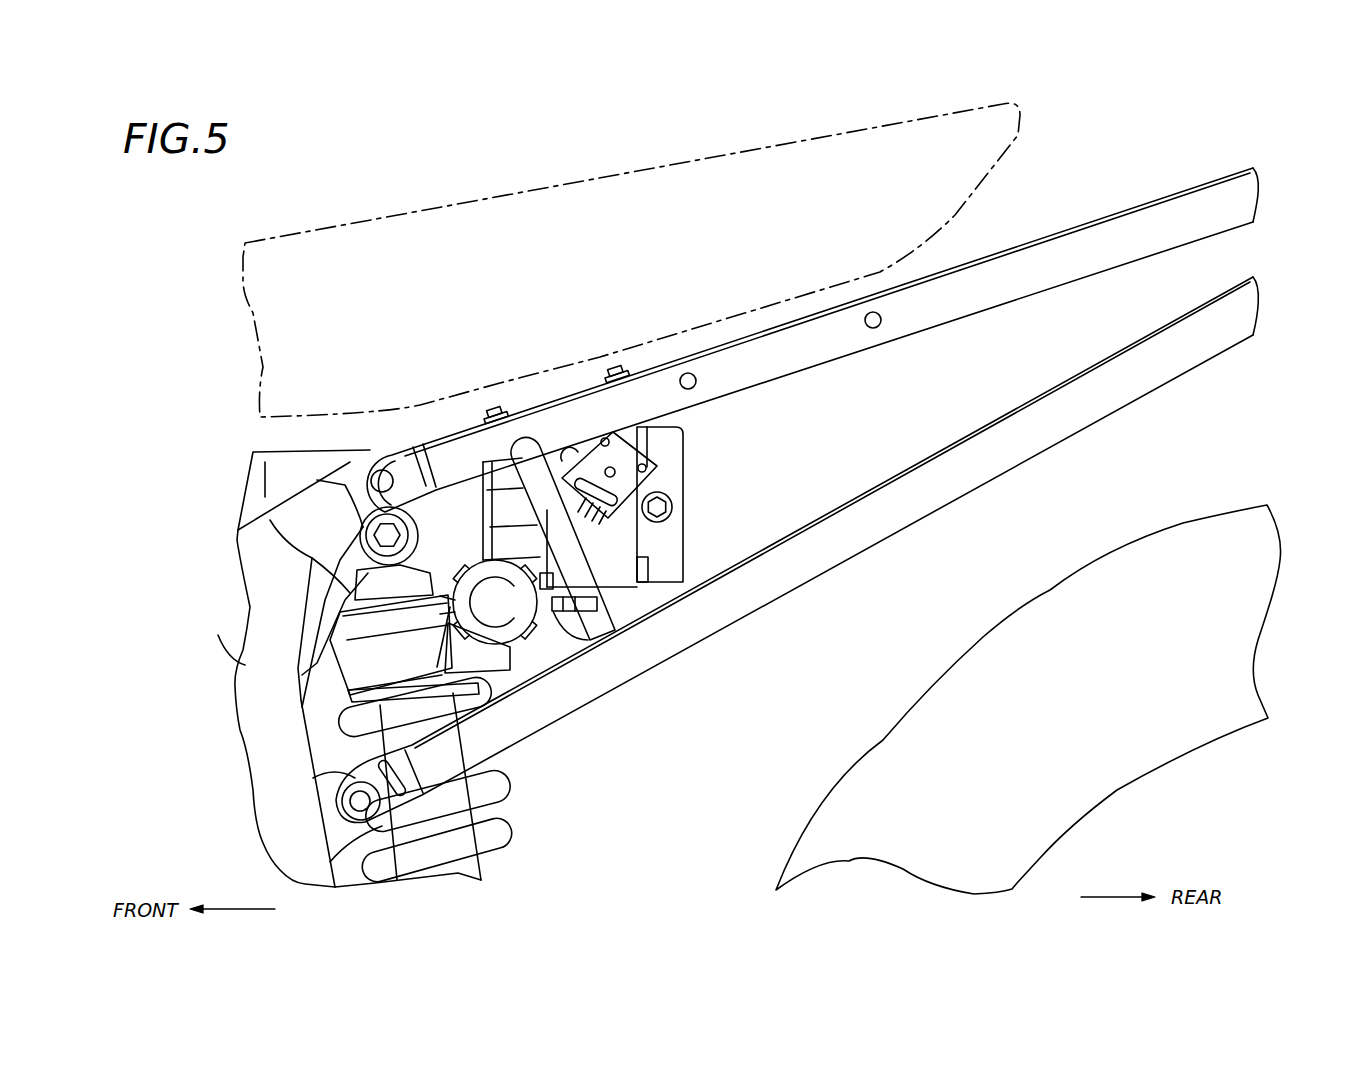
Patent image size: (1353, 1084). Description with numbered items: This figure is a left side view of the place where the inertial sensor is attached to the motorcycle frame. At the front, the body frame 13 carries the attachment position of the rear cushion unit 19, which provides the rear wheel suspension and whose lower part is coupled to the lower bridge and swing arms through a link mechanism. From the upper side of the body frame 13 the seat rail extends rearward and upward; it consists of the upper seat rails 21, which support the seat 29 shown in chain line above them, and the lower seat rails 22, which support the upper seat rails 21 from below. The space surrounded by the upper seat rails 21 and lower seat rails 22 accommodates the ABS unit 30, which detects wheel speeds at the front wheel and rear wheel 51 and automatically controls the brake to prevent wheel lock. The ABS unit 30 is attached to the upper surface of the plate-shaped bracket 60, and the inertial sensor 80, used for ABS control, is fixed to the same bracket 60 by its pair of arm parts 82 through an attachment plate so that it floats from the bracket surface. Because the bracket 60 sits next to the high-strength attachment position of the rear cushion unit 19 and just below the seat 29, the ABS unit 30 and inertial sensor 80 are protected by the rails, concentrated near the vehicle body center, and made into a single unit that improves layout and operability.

The body frame 13 is at (251, 663).
The rear cushion unit 19 is at (465, 817).
The upper seat rail 21 is at (752, 347).
The lower seat rail 22 is at (862, 508).
The seat 29 is at (643, 168).
The ABS unit 30 is at (670, 458).
The rear wheel 51 is at (1103, 567).
The bracket 60 is at (628, 548).
The inertial sensor 80 is at (612, 458).
The arm part 82 is at (580, 450).